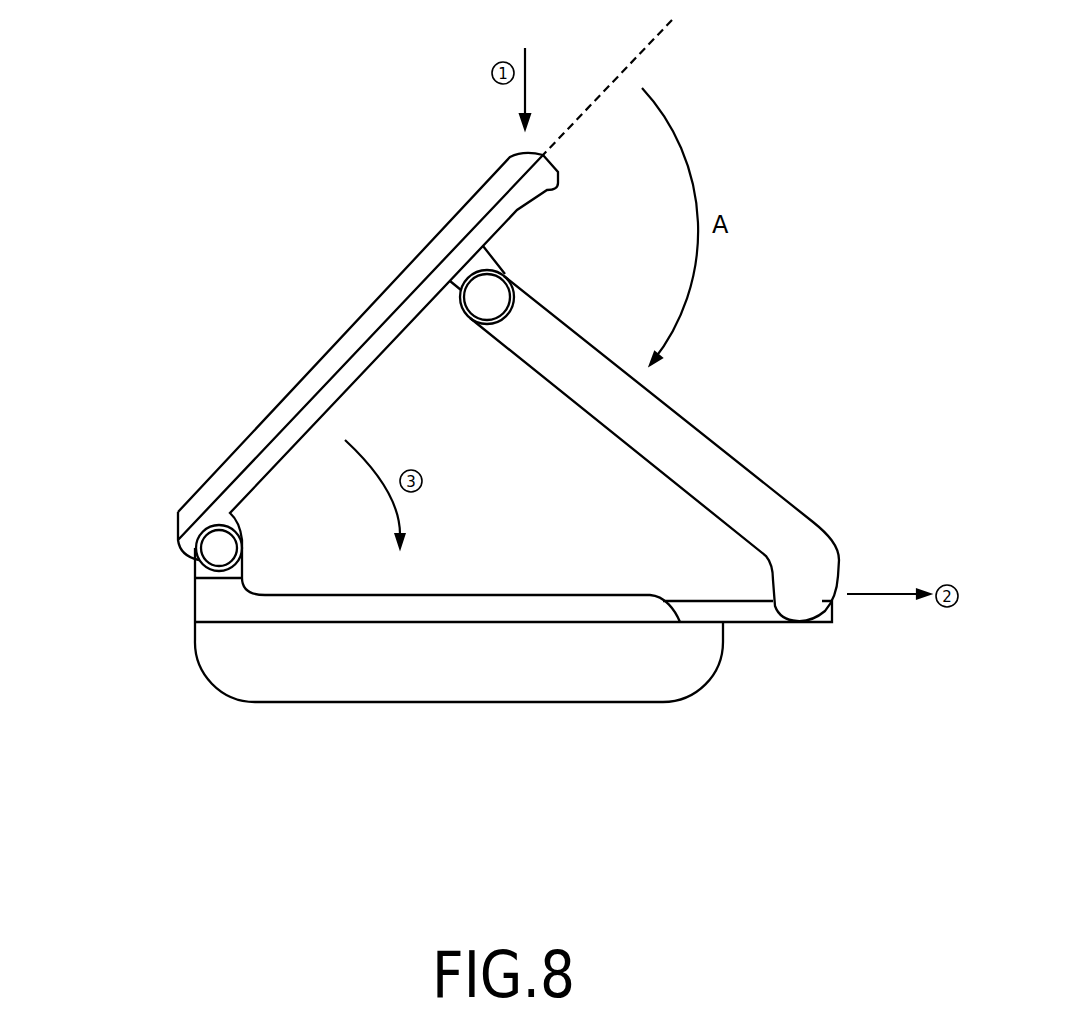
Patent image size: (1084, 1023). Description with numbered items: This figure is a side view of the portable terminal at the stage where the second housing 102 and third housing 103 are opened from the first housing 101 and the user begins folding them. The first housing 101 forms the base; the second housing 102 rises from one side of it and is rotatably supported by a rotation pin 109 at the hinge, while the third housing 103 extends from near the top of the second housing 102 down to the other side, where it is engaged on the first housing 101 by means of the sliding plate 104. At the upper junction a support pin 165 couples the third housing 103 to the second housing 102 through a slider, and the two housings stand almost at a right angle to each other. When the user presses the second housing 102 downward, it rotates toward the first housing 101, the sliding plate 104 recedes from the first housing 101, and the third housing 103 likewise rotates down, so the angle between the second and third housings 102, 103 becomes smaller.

The first housing 101 is at (238, 715).
The second housing 102 is at (255, 399).
The third housing 103 is at (740, 444).
The sliding plate 104 is at (753, 632).
The rotation pin 109 is at (218, 548).
The support pin 165 is at (485, 296).